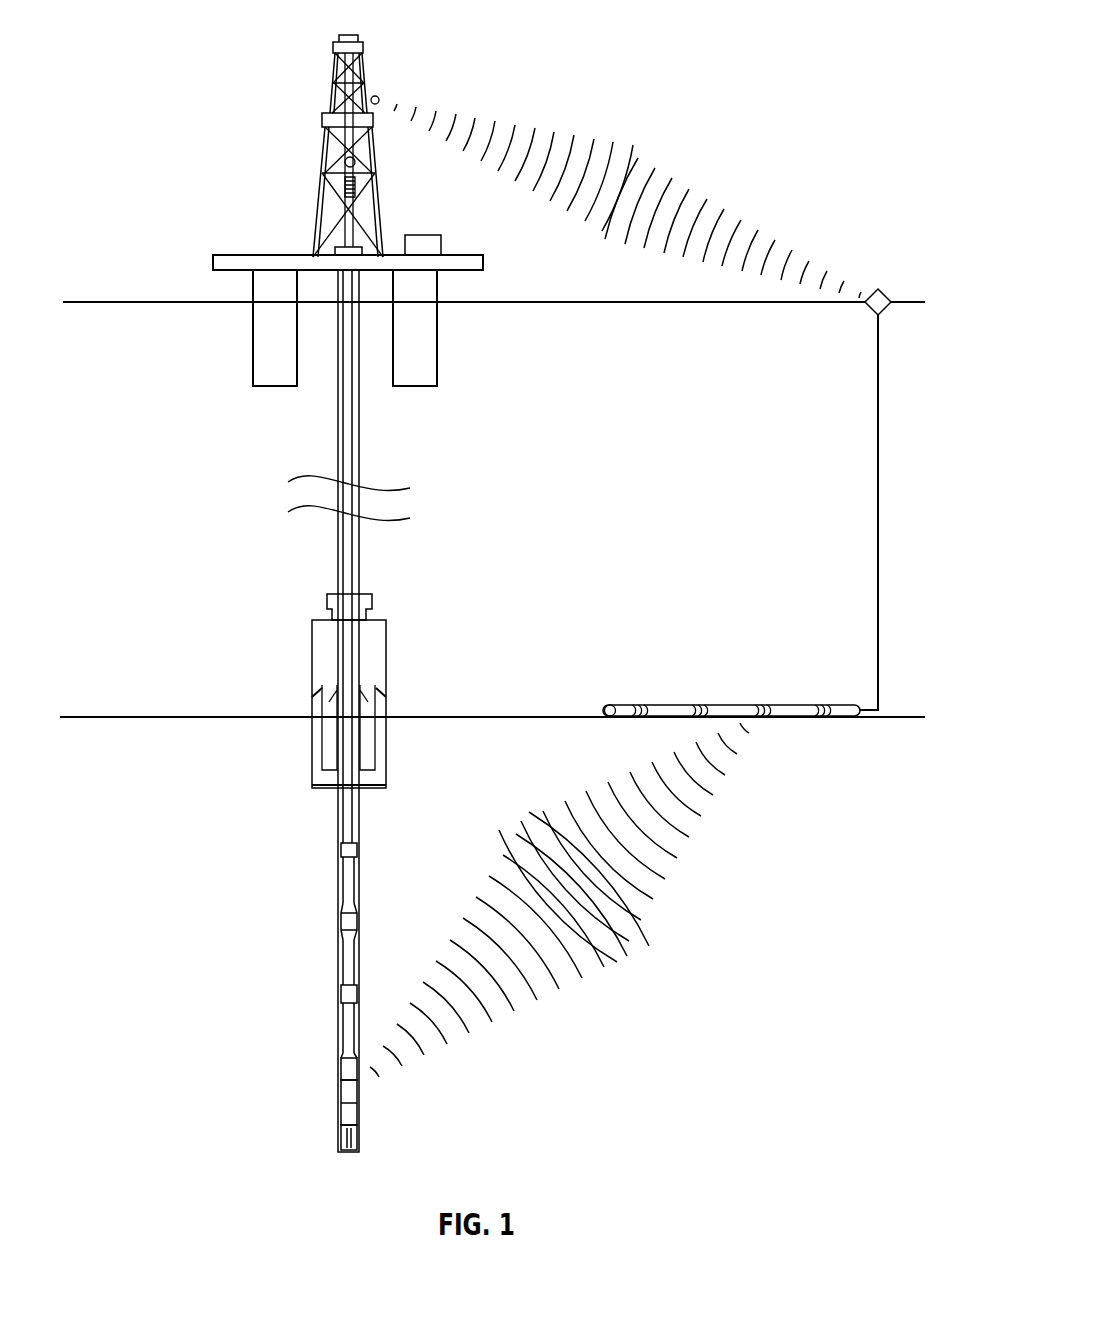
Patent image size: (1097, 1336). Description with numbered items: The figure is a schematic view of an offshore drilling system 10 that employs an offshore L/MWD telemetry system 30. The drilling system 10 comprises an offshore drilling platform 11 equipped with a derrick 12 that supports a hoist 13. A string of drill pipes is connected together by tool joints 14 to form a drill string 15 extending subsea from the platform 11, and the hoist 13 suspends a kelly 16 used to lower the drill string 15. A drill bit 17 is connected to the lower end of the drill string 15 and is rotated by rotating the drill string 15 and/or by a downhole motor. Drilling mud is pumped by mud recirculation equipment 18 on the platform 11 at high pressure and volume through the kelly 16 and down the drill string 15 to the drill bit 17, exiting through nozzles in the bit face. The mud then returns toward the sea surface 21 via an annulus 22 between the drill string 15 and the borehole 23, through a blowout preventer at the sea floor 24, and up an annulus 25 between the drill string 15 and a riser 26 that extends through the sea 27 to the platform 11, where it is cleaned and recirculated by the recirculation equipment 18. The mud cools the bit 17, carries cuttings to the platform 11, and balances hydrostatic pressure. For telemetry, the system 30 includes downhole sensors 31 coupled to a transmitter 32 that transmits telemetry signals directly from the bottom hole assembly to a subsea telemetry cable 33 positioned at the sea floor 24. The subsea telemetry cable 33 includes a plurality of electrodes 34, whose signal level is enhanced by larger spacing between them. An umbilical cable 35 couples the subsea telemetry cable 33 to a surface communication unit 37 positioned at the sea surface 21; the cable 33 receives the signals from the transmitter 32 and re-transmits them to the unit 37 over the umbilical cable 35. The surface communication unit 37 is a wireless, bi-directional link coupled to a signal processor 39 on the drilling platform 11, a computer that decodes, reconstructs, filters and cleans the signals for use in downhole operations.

The offshore drilling system 10 is at (721, 83).
The offshore drilling platform 11 is at (514, 233).
The derrick 12 is at (332, 80).
The hoist 13 is at (374, 162).
The tool joints 14 is at (358, 907).
The drill string 15 is at (344, 440).
The kelly 16 is at (345, 180).
The drill bit 17 is at (355, 1137).
The mud recirculation equipment 18 is at (423, 235).
The sea surface 21 is at (612, 301).
The annulus 22 is at (358, 877).
The borehole 23 is at (358, 973).
The sea floor 24 is at (494, 716).
The annulus 25 is at (354, 545).
The riser 26 is at (360, 577).
The sea 27 is at (592, 510).
The offshore L/MWD telemetry system 30 is at (175, 280).
The downhole sensors 31 is at (355, 1090).
The transmitter 32 is at (345, 1070).
The subsea telemetry cable 33 is at (730, 703).
The electrodes 34 is at (632, 705).
The umbilical cable 35 is at (877, 478).
The surface communication unit 37 is at (891, 291).
The signal processor 39 is at (378, 96).